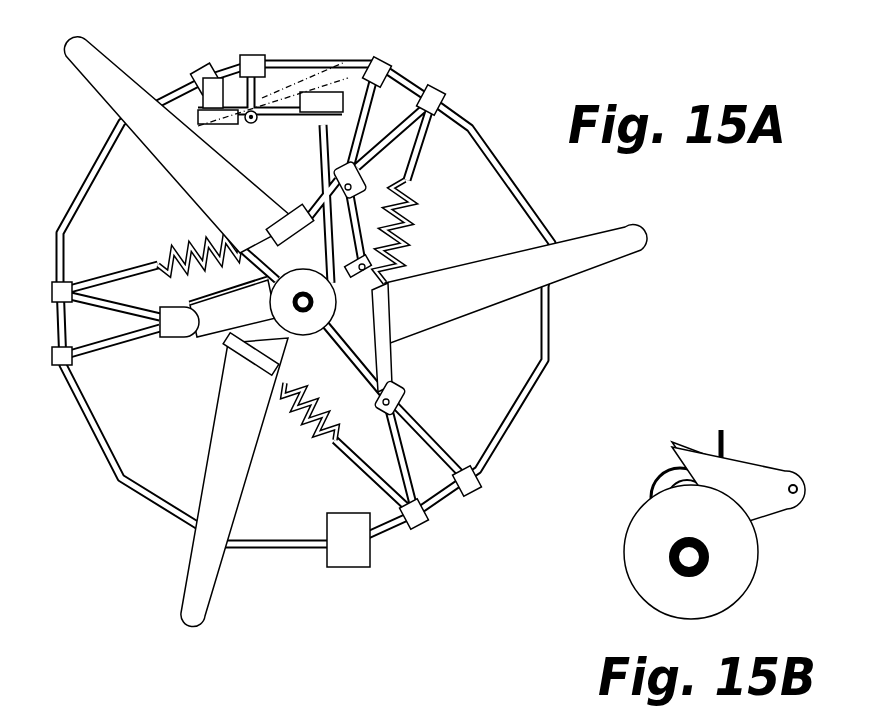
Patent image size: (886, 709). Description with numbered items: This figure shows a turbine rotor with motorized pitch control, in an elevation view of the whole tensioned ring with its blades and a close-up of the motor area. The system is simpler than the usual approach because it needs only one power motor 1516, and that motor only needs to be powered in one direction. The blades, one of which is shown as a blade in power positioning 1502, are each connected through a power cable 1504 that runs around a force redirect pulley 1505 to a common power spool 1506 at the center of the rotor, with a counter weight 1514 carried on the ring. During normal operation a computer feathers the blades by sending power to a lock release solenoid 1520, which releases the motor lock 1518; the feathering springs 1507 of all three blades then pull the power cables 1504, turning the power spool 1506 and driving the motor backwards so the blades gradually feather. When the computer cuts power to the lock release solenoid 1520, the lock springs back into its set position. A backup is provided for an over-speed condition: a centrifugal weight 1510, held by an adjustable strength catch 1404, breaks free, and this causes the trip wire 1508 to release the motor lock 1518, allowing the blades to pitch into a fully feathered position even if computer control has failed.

In FIG. 15A, the adjustable strength catch 1404 is at (167, 90).
In FIG. 15A, the blade in power positioning 1502 is at (200, 575).
In FIG. 15A, the power cable 1504 is at (392, 362).
In FIG. 15A, the force redirect pulley 1505 is at (176, 343).
In FIG. 15A, the power spool 1506 is at (272, 300).
In FIG. 15B, the power spool 1506 is at (653, 573).
In FIG. 15A, the feathering spring 1507 is at (152, 262).
In FIG. 15A, the trip wire 1508 is at (326, 152).
In FIG. 15A, the centrifugal weight 1510 is at (350, 60).
In FIG. 15A, the counter weight 1514 is at (343, 553).
In FIG. 15B, the power motor 1516 is at (650, 468).
In FIG. 15B, the motor lock 1518 is at (790, 414).
In FIG. 15B, the lock release solenoid 1520 is at (744, 542).